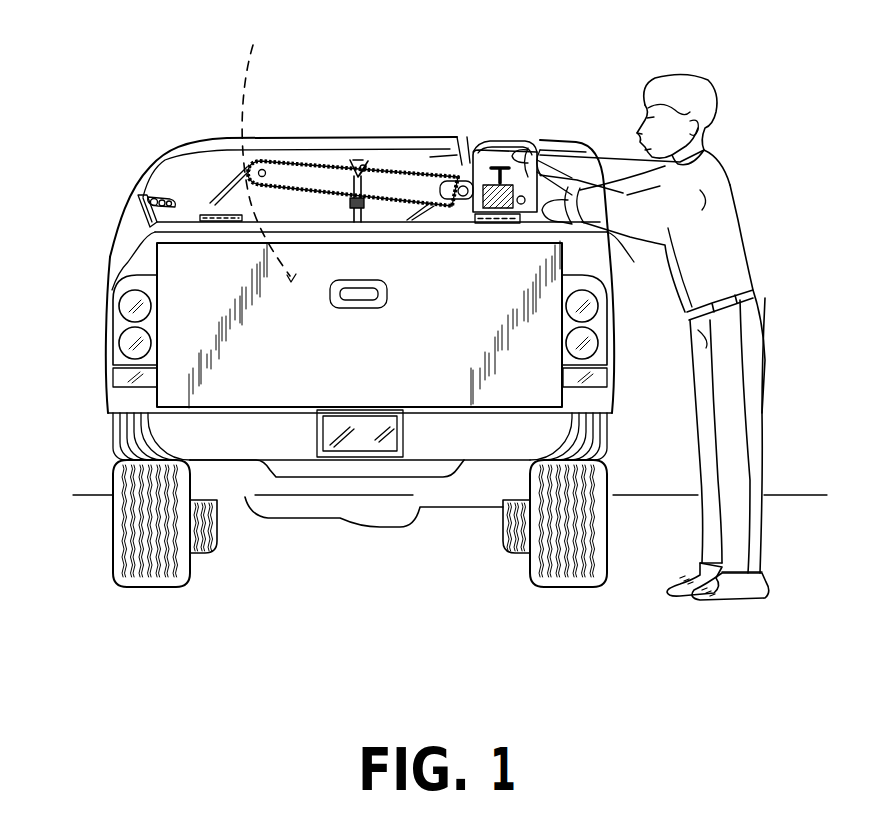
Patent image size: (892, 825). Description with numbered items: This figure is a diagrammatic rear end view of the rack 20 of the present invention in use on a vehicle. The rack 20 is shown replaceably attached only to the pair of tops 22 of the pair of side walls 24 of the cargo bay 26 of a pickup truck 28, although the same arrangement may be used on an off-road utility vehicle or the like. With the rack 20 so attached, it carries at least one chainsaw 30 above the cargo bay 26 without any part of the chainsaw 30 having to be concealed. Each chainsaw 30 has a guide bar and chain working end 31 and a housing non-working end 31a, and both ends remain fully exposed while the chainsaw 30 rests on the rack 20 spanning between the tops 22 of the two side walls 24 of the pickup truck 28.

The rack 20 is at (197, 177).
The tops of side walls 22 is at (127, 247).
The side walls 24 is at (562, 305).
The cargo bay 26 is at (267, 146).
The pickup truck 28 is at (436, 137).
The chainsaw 30 is at (374, 163).
The guide bar and chain working end 31 is at (332, 164).
The housing non-working end 31a is at (508, 158).